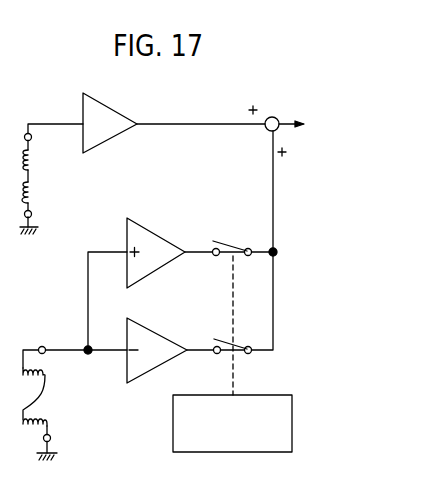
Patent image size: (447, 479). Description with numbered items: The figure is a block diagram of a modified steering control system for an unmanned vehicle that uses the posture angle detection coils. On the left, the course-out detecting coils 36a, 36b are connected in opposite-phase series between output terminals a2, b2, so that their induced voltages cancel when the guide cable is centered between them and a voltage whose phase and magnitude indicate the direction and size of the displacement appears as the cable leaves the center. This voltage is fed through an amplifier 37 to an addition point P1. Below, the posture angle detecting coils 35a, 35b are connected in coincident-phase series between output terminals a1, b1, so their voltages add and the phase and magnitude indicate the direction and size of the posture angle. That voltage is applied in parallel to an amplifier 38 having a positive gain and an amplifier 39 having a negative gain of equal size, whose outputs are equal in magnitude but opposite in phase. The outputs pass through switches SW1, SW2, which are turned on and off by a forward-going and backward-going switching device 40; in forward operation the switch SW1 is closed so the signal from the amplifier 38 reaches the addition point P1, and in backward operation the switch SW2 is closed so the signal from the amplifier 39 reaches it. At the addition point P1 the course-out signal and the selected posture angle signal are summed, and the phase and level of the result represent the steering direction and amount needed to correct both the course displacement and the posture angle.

The amplifier 37 is at (113, 105).
The amplifier having a gain of +K2 38 is at (157, 228).
The amplifier having a gain of -K2 39 is at (162, 332).
The forward-going and backward-going switching device 40 is at (173, 417).
The posture angle detecting coil 35a is at (48, 372).
The posture angle detecting coil 35b is at (48, 421).
The course-out detecting coil 36a is at (37, 162).
The course-out detecting coil 36b is at (37, 190).
The output terminal a1 is at (37, 338).
The output terminal a2 is at (37, 138).
The output terminal b1 is at (57, 441).
The output terminal b2 is at (38, 215).
The addition point P1 is at (272, 116).
The switch SW1 is at (234, 240).
The switch SW2 is at (242, 341).